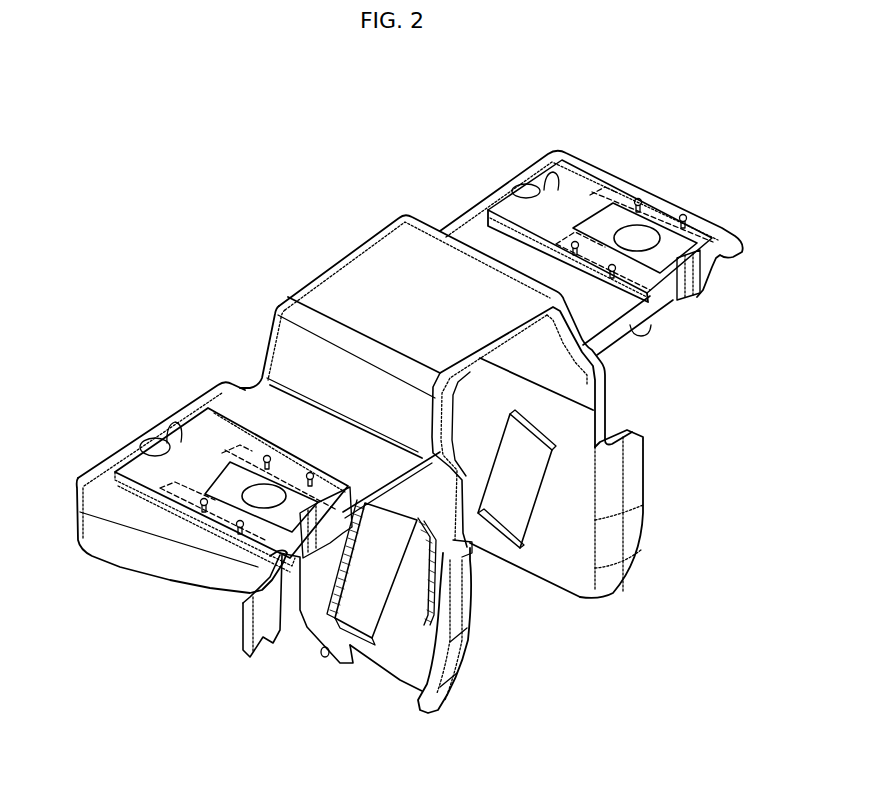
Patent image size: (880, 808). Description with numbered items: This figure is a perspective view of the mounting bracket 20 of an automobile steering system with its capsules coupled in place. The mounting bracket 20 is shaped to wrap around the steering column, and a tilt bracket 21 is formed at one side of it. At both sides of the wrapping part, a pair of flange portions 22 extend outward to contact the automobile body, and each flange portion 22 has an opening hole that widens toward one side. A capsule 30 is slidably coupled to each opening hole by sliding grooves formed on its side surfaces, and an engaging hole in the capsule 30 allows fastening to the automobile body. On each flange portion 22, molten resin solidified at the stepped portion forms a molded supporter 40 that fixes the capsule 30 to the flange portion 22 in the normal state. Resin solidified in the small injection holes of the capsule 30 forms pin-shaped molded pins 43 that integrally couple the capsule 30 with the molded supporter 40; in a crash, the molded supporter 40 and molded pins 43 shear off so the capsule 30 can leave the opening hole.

The mounting bracket 20 is at (330, 224).
The tilt bracket 21 is at (637, 492).
The flange portion 22 is at (470, 230).
The capsule 30 is at (126, 448).
The molded supporter 40 is at (199, 522).
The molded pin 43 is at (238, 521).